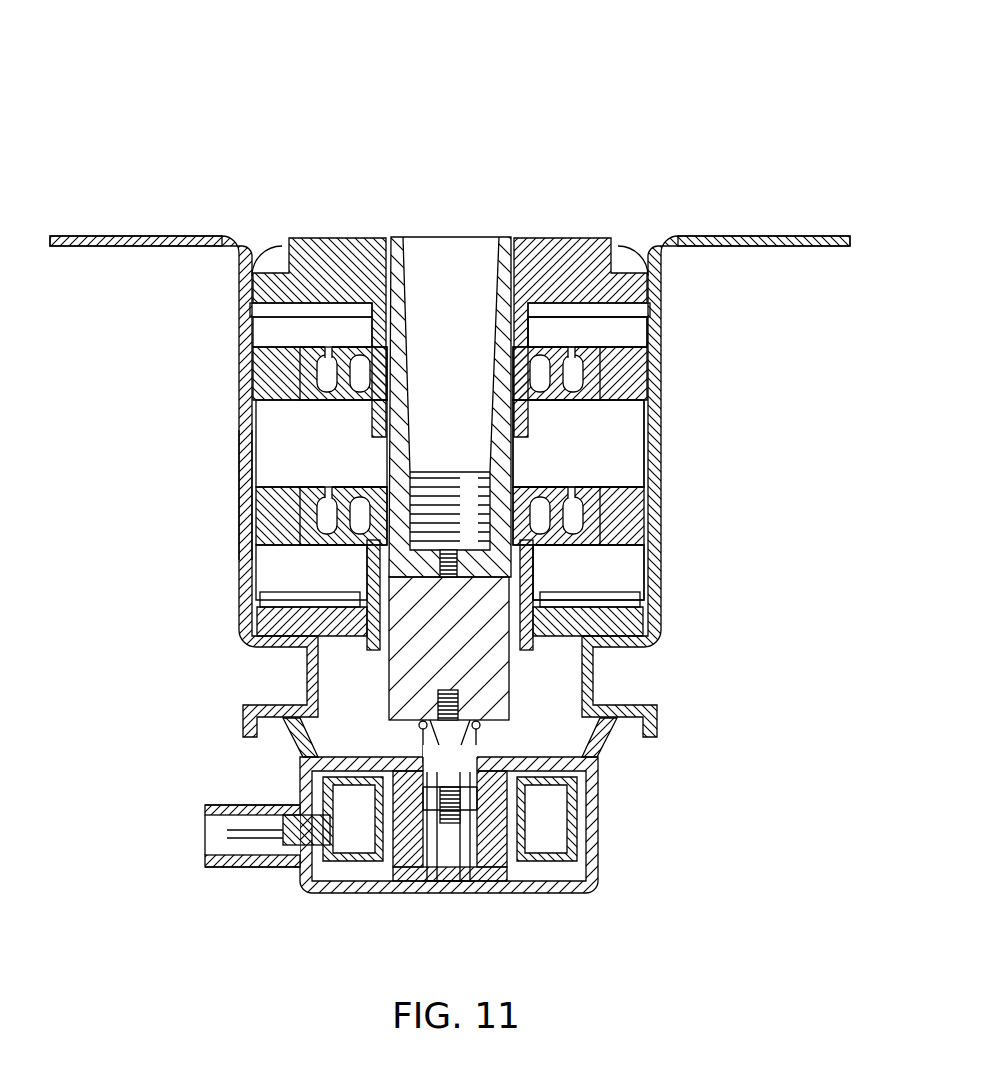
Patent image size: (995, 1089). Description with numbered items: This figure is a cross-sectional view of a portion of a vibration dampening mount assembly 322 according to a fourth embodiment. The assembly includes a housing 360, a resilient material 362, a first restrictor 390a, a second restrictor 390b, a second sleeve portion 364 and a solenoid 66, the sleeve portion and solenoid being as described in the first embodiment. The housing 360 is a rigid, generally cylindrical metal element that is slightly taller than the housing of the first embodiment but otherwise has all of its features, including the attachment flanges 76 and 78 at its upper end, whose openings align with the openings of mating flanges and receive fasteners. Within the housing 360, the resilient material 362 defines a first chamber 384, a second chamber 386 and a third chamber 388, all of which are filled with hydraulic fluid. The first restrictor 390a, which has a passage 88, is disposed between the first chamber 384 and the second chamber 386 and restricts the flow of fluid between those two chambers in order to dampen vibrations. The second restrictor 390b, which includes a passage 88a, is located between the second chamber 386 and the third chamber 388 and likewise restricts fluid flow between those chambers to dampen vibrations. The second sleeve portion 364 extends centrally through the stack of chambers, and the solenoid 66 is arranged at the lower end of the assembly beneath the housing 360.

The vibration dampening mount assembly 322 is at (716, 58).
The attachment flange 78 is at (86, 248).
The attachment flange 76 is at (818, 248).
The housing 360 is at (237, 273).
The resilient material 362 is at (238, 503).
The second sleeve portion 364 is at (499, 301).
The first chamber 384 is at (618, 333).
The second chamber 386 is at (616, 413).
The third chamber 388 is at (621, 555).
The passage 88 is at (360, 387).
The passage 88a is at (360, 524).
The first restrictor 390a is at (590, 390).
The second restrictor 390b is at (581, 545).
The solenoid 66 is at (600, 796).